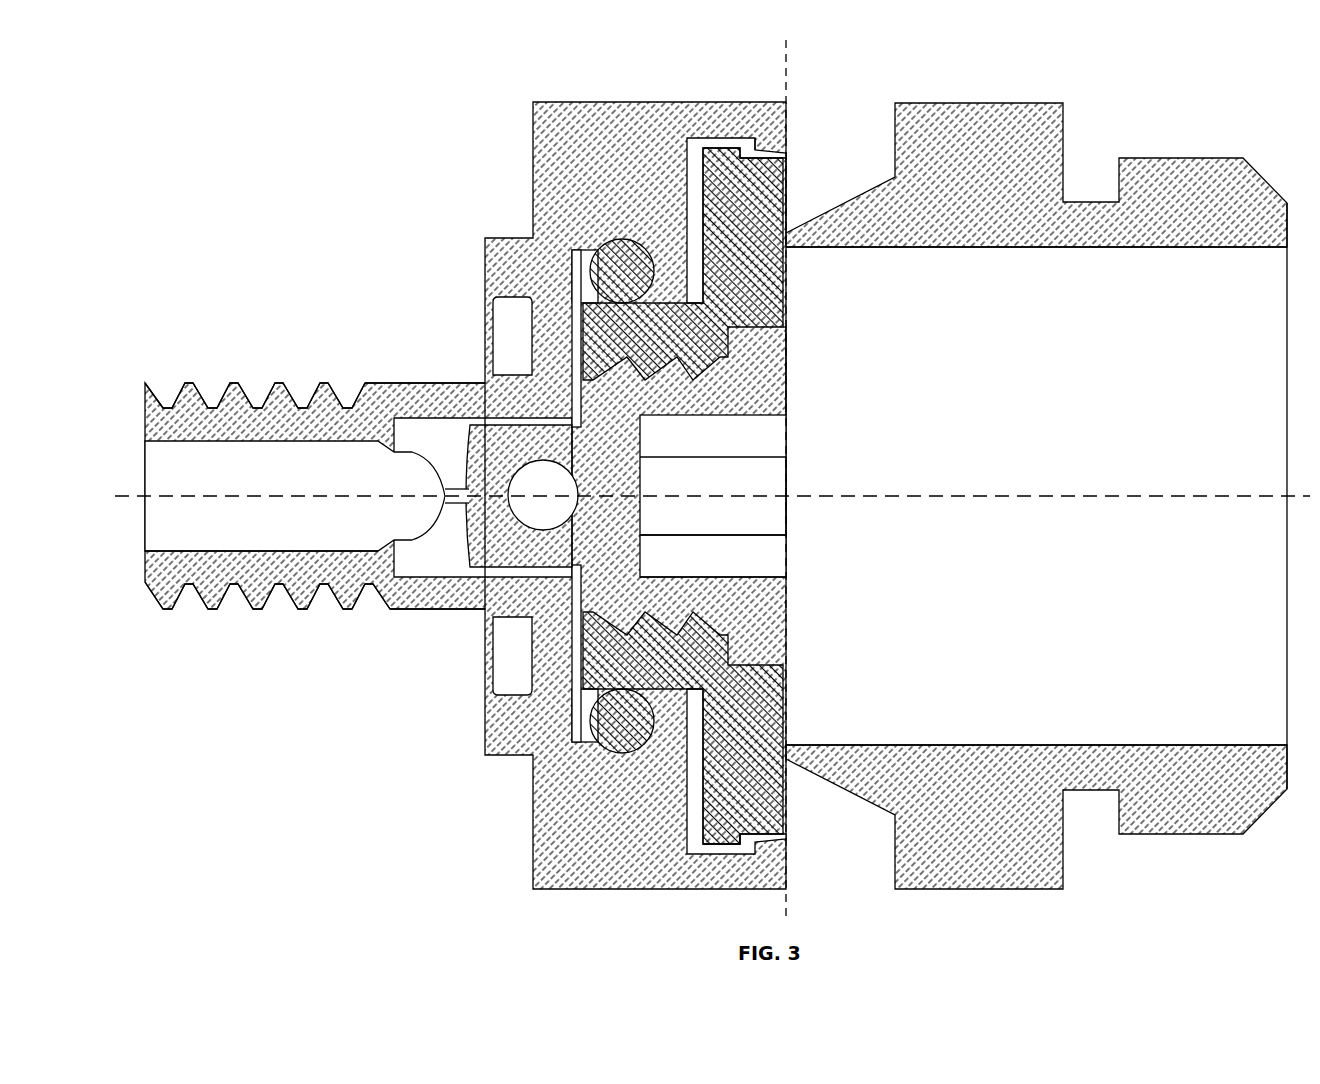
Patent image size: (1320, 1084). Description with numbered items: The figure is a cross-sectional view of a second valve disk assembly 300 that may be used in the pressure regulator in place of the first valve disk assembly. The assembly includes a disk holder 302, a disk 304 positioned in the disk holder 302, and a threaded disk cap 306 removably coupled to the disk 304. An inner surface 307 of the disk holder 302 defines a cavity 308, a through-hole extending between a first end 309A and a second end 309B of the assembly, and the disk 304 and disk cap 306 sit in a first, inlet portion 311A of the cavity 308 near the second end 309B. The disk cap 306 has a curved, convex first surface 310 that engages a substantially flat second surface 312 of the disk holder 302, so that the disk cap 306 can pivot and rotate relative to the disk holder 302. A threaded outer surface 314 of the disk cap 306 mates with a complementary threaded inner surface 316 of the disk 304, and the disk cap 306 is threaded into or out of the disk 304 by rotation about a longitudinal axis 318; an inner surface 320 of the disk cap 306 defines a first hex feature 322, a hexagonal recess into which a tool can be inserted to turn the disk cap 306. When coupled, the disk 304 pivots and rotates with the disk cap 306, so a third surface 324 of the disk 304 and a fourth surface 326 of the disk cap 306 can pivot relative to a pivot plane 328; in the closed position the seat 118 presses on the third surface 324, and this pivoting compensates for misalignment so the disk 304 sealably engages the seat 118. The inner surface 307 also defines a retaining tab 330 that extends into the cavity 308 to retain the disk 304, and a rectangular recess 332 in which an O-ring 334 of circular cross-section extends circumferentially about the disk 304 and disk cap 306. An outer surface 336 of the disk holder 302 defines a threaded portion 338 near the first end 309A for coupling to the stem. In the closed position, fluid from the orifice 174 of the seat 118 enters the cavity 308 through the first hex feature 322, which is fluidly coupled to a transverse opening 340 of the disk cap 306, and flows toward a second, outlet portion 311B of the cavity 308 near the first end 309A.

The second valve disk assembly 300 is at (295, 166).
The disk holder 302 is at (575, 100).
The disk 304 is at (790, 215).
The disk cap 306 is at (787, 397).
The inner surface of the disk holder 307 is at (302, 548).
The cavity 308 is at (311, 481).
The first end 309A is at (123, 386).
The second end 309B is at (861, 403).
The first surface 310 is at (470, 440).
The first portion of the cavity 311A is at (804, 541).
The second portion of the cavity 311B is at (123, 524).
The second surface 312 is at (480, 582).
The threaded outer surface 314 is at (647, 362).
The threaded inner surface 316 is at (640, 362).
The longitudinal axis 318 is at (1150, 495).
The inner surface of the disk cap 320 is at (680, 570).
The first hex feature 322 is at (799, 484).
The third surface 324 is at (787, 185).
The fourth surface 326 is at (787, 338).
The pivot plane 328 is at (790, 112).
The tab 330 is at (752, 838).
The recess 332 is at (592, 255).
The O-ring 334 is at (625, 240).
The outer surface of the disk holder 336 is at (385, 383).
The threaded portion 338 is at (268, 381).
The opening 340 is at (527, 468).
The seat 118 is at (975, 103).
The orifice 174 is at (1058, 456).